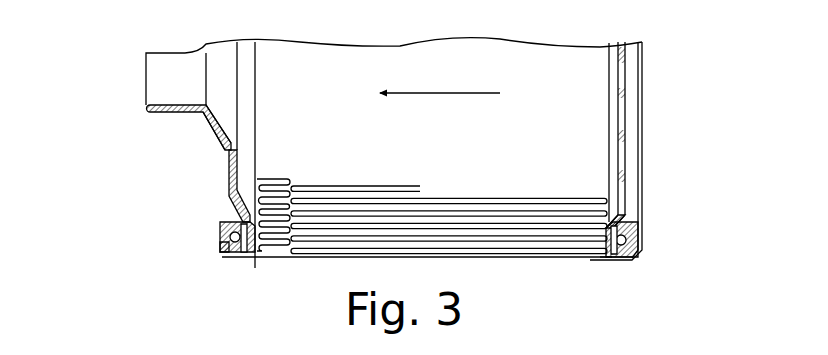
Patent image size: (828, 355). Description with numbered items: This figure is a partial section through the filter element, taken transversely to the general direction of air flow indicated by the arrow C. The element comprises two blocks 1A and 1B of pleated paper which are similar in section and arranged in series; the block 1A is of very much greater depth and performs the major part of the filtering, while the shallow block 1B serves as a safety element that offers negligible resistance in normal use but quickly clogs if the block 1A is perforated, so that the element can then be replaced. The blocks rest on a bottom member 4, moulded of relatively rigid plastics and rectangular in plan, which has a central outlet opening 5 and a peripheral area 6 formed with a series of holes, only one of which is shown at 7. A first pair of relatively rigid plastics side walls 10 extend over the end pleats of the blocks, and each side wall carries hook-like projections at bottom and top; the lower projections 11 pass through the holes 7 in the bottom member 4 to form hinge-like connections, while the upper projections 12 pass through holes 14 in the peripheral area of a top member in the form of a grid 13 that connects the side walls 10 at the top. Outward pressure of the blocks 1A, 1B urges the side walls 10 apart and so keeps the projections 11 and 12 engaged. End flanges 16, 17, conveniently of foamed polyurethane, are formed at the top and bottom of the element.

The block of pleated paper 1A is at (472, 182).
The block of pleated paper 1B is at (267, 175).
The bottom member 4 is at (207, 120).
The central outlet opening 5 is at (147, 110).
The peripheral area 6 is at (222, 205).
The hole 7 is at (222, 228).
The side wall 10 is at (622, 262).
The lower hook-like projection 11 is at (218, 245).
The upper hook-like projection 12 is at (645, 252).
The grid 13 is at (625, 117).
The hole 14 is at (640, 240).
The end flange 16 is at (640, 253).
The end flange 17 is at (238, 262).
The arrow indicating direction of air flow C is at (440, 77).